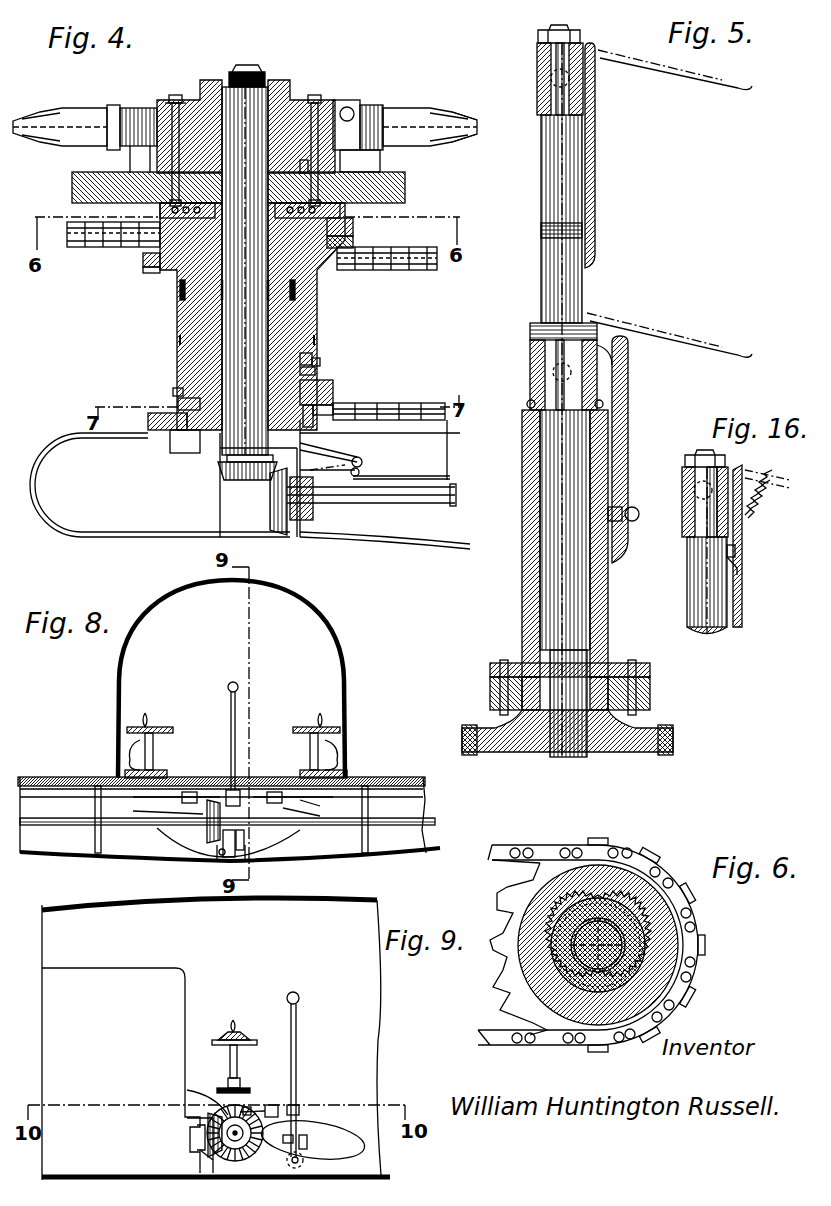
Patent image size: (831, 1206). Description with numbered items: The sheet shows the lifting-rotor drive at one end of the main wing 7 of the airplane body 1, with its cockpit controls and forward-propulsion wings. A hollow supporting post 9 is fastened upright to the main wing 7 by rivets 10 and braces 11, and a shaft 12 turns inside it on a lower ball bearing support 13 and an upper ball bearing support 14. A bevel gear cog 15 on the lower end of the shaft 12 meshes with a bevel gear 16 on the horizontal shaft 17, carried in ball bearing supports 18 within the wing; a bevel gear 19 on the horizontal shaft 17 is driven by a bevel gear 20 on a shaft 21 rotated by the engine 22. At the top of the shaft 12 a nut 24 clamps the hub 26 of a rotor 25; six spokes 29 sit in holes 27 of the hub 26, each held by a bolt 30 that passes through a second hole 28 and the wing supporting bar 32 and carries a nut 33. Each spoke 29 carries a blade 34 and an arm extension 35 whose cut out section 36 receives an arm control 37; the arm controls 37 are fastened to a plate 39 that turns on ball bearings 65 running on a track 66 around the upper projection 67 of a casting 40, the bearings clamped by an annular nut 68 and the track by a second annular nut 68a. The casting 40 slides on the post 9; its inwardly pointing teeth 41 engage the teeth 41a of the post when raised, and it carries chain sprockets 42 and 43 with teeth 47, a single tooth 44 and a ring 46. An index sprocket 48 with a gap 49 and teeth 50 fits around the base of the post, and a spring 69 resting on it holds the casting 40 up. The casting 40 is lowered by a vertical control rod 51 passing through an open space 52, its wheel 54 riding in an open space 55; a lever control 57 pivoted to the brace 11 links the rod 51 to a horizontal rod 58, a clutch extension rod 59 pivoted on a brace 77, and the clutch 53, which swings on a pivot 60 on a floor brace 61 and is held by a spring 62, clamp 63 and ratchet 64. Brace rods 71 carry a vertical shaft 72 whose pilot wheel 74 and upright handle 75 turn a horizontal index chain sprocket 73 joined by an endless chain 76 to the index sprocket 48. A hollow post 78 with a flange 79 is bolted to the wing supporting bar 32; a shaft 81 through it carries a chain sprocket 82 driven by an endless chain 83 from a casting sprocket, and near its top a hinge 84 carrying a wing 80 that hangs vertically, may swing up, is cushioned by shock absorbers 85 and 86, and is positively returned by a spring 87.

In FIG. 8, the tank 1 is at (327, 620).
In FIG. 9, the tank 1 is at (363, 906).
In FIG. 4, the main wing 7 is at (40, 434).
In FIG. 8, the main wing 7 is at (27, 857).
In FIG. 4, the hollow supporting post 9 is at (293, 350).
In FIG. 6, the hollow supporting post 9 is at (640, 943).
In FIG. 4, the rivet 10 is at (191, 460).
In FIG. 4, the brace 11 is at (173, 452).
In FIG. 4, the shaft 12 is at (270, 337).
In FIG. 6, the shaft 12 is at (640, 933).
In FIG. 4, the ball bearing support 13 is at (217, 457).
In FIG. 4, the second ball bearing support 14 is at (183, 292).
In FIG. 4, the bevel gear cog 15 is at (227, 478).
In FIG. 4, the bevel gear 16 is at (277, 521).
In FIG. 4, the horizontal shaft 17 is at (382, 504).
In FIG. 8, the horizontal shaft 17 is at (115, 827).
In FIG. 9, the horizontal shaft 17 is at (237, 1143).
In FIG. 4, the ball bearing support 18 is at (308, 516).
In FIG. 8, the bevel gear 19 is at (217, 860).
In FIG. 9, the bevel gear 19 is at (227, 1120).
In FIG. 9, the bevel gear 20 is at (213, 1173).
In FIG. 9, the shaft 21 is at (200, 1173).
In FIG. 9, the airplane engine 22 is at (188, 970).
In FIG. 4, the nut 24 is at (273, 68).
In FIG. 4, the rotor 25 is at (107, 110).
In FIG. 4, the hub 26 is at (205, 100).
In FIG. 4, the hole 27 is at (152, 152).
In FIG. 4, the second hole 28 is at (173, 95).
In FIG. 4, the spoke 29 is at (97, 147).
In FIG. 4, the bolt 30 is at (340, 108).
In FIG. 4, the wing supporting bar 32 is at (405, 190).
In FIG. 5, the wing supporting bar 32 is at (490, 694).
In FIG. 4, the nut 33 is at (172, 102).
In FIG. 4, the blade 34 is at (471, 128).
In FIG. 4, the arm extension 35 is at (120, 147).
In FIG. 4, the cut out section 36 is at (340, 97).
In FIG. 4, the arm control 37 is at (393, 173).
In FIG. 4, the plate 39 is at (362, 209).
In FIG. 4, the casting 40 is at (182, 328).
In FIG. 6, the casting 40 is at (622, 877).
In FIG. 4, the inwardly pointing teeth 41 is at (320, 287).
In FIG. 6, the inwardly pointing teeth 41 is at (550, 963).
In FIG. 4, the teeth 41a is at (160, 288).
In FIG. 6, the teeth 41a is at (553, 947).
In FIG. 4, the chain sprocket 42 is at (143, 260).
In FIG. 6, the chain sprocket 42 is at (503, 890).
In FIG. 4, the chain sprocket 43 is at (143, 273).
In FIG. 4, the tooth 44 is at (175, 399).
In FIG. 4, the ring 46 is at (352, 373).
In FIG. 4, the teeth 47 is at (143, 230).
In FIG. 6, the teeth 47 is at (503, 995).
In FIG. 4, the index sprocket 48 is at (333, 402).
In FIG. 4, the gap 49 is at (163, 442).
In FIG. 4, the teeth 50 is at (363, 407).
In FIG. 4, the vertical control rod 51 is at (328, 410).
In FIG. 4, the open space 52 is at (350, 447).
In FIG. 8, the clutch 53 is at (230, 770).
In FIG. 9, the clutch 53 is at (302, 1107).
In FIG. 4, the wheel 54 is at (320, 383).
In FIG. 4, the open space 55 is at (313, 367).
In FIG. 4, the lever control 57 is at (362, 465).
In FIG. 4, the horizontal rod 58 is at (411, 462).
In FIG. 8, the horizontal rod 58 is at (32, 803).
In FIG. 8, the clutch extension rod 59 is at (212, 796).
In FIG. 9, the clutch extension rod 59 is at (252, 1110).
In FIG. 8, the pivot 60 is at (255, 842).
In FIG. 9, the pivot 60 is at (288, 1158).
In FIG. 8, the floor brace 61 is at (222, 857).
In FIG. 9, the floor brace 61 is at (327, 1151).
In FIG. 8, the spring 62 is at (293, 828).
In FIG. 9, the spring 62 is at (305, 1138).
In FIG. 8, the clamp 63 is at (240, 836).
In FIG. 9, the clamp 63 is at (293, 1143).
In FIG. 9, the sector 64 is at (338, 1121).
In FIG. 4, the ball bearings 65 is at (353, 239).
In FIG. 4, the track 66 is at (353, 225).
In FIG. 4, the upper projection 67 is at (330, 178).
In FIG. 4, the annular nut 68 is at (178, 104).
In FIG. 4, the second annular nut 68a is at (333, 180).
In FIG. 4, the spring 69 is at (176, 391).
In FIG. 8, the brace rod 71 is at (132, 757).
In FIG. 9, the brace rod 71 is at (240, 1078).
In FIG. 8, the vertical shaft 72 is at (153, 754).
In FIG. 9, the vertical shaft 72 is at (233, 1060).
In FIG. 8, the horizontal index chain sprocket 73 is at (165, 778).
In FIG. 9, the horizontal index chain sprocket 73 is at (250, 1088).
In FIG. 8, the pilot wheel 74 is at (167, 730).
In FIG. 9, the pilot wheel 74 is at (248, 1040).
In FIG. 8, the upright handle 75 is at (145, 713).
In FIG. 9, the upright handle 75 is at (233, 1020).
In FIG. 4, the endless chain 76 is at (412, 398).
In FIG. 8, the endless chain 76 is at (58, 778).
In FIG. 8, the brace 77 is at (320, 804).
In FIG. 5, the upright hollow post 78 is at (523, 597).
In FIG. 5, the flange 79 is at (493, 668).
In FIG. 5, the wing 80 is at (687, 74).
In FIG. 16, the wing 80 is at (768, 478).
In FIG. 5, the shaft 81 is at (542, 294).
In FIG. 16, the shaft 81 is at (688, 609).
In FIG. 5, the chain sprocket 82 is at (612, 752).
In FIG. 4, the endless chain 83 is at (90, 247).
In FIG. 5, the endless chain 83 is at (667, 724).
In FIG. 6, the endless chain 83 is at (497, 847).
In FIG. 5, the hinge 84 is at (540, 76).
In FIG. 16, the hinge 84 is at (687, 497).
In FIG. 5, the shock absorber 85 is at (586, 226).
In FIG. 5, the shock absorber 86 is at (627, 507).
In FIG. 16, the spring 87 is at (757, 513).